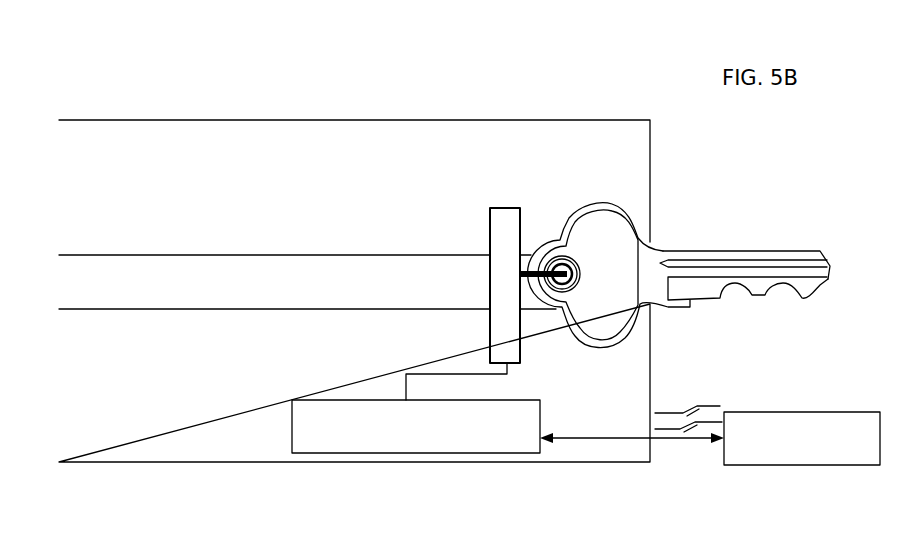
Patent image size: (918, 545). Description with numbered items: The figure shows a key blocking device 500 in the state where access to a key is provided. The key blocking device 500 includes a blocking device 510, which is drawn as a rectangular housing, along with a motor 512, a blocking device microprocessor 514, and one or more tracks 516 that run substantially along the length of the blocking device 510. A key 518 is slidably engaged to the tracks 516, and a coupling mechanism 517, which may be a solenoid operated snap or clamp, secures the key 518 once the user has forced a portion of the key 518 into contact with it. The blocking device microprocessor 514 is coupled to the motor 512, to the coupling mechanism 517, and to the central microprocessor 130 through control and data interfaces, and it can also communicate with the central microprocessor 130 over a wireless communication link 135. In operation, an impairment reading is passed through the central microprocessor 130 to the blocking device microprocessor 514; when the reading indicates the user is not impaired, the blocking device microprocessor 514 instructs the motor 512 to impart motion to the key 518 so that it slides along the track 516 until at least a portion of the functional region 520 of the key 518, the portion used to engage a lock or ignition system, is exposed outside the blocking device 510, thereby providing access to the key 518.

The key blocking device 500 is at (258, 60).
The blocking device 510 is at (94, 108).
The motor 512 is at (502, 208).
The blocking device microprocessor 514 is at (440, 455).
The track 516 is at (88, 310).
The coupling mechanism 517 is at (562, 264).
The key 518 is at (614, 253).
The functional region 520 is at (758, 290).
The wireless communication link 135 is at (703, 405).
The central microprocessor 130 is at (763, 466).